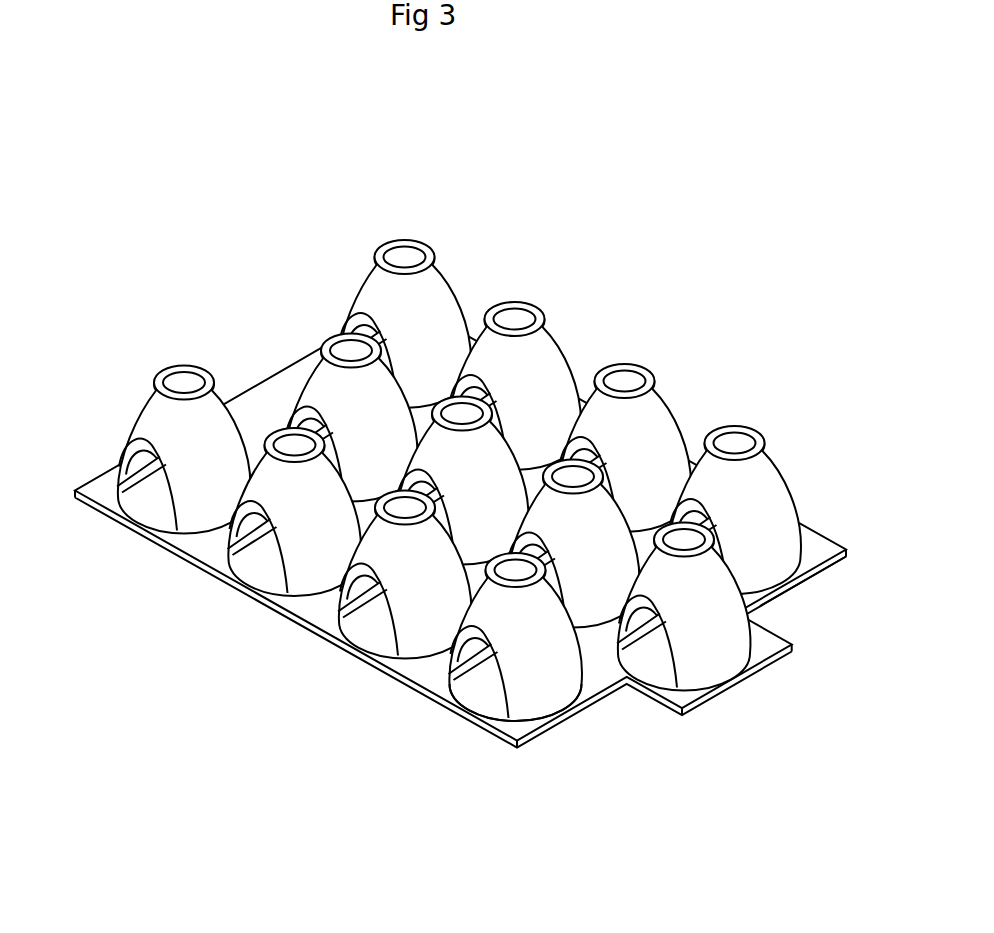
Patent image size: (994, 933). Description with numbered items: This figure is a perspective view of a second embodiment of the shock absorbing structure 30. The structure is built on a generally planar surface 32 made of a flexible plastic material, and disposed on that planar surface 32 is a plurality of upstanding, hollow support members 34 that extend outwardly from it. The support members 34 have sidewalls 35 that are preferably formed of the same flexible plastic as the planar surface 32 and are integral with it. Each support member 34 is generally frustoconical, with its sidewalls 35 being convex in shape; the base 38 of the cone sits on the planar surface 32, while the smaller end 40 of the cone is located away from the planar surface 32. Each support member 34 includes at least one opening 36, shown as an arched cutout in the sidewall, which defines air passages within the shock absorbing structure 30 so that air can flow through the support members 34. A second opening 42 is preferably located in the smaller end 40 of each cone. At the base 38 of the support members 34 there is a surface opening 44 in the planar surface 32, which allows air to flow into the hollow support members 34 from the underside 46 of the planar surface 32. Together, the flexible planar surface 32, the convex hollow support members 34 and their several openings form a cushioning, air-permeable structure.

The shock absorbing structure 30 is at (489, 527).
The planar surface 32 is at (489, 563).
The support members 34 is at (535, 693).
The sidewalls 35 is at (782, 447).
The opening 36 is at (709, 721).
The base 38 is at (516, 789).
The smaller end 40 is at (795, 412).
The second opening 42 is at (736, 377).
The surface opening 44 is at (448, 730).
The underside 46 is at (818, 582).